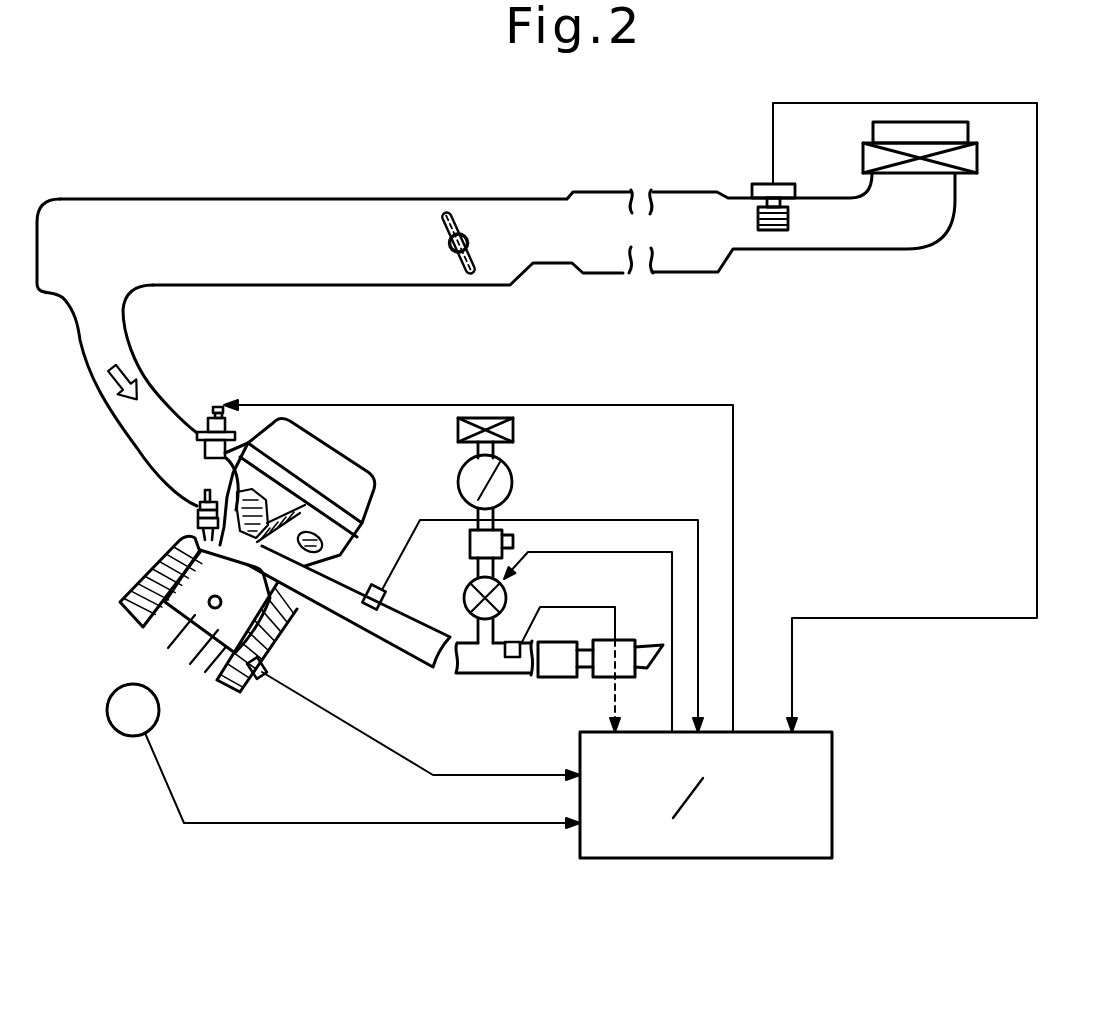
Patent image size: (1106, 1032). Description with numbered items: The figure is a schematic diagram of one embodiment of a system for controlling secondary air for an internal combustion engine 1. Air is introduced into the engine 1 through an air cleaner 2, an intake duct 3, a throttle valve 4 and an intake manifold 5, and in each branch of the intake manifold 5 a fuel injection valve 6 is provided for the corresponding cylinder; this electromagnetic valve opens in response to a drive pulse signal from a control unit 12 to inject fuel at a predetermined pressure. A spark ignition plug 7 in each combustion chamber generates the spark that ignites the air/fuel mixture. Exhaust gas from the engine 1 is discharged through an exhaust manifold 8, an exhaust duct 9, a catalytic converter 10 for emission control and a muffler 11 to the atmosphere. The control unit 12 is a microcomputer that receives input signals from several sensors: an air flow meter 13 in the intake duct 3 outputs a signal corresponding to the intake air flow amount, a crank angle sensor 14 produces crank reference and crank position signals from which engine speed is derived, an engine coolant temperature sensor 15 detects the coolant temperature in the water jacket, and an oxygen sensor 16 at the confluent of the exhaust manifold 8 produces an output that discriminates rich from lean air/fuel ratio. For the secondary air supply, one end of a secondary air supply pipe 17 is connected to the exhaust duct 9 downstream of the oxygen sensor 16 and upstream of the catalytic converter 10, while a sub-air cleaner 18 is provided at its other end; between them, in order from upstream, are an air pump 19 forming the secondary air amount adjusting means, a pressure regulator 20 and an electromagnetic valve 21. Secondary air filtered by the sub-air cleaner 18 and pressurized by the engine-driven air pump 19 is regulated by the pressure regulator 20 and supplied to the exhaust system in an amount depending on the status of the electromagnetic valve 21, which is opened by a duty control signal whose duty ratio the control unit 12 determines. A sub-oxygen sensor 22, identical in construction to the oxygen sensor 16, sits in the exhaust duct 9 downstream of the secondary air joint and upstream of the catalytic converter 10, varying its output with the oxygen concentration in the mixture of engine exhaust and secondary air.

The internal combustion engine 1 is at (390, 512).
The air cleaner 2 is at (978, 163).
The intake duct 3 is at (676, 190).
The throttle valve 4 is at (458, 262).
The intake manifold 5 is at (78, 341).
The fuel injection valve 6 is at (212, 404).
The spark ignition plug 7 is at (197, 506).
The exhaust manifold 8 is at (372, 634).
The exhaust duct 9 is at (500, 677).
The catalytic converter 10 is at (553, 677).
The muffler 11 is at (602, 677).
The control unit 12 is at (832, 750).
The air flow meter 13 is at (762, 183).
The crank angle sensor 14 is at (115, 692).
The engine coolant temperature sensor 15 is at (266, 661).
The oxygen sensor 16 is at (478, 568).
The secondary air supply pipe 17 is at (385, 598).
The sub-air cleaner 18 is at (515, 430).
The air pump 19 is at (515, 480).
The pressure regulator 20 is at (470, 543).
The electromagnetic valve 21 is at (506, 593).
The sub-oxygen sensor 22 is at (523, 642).